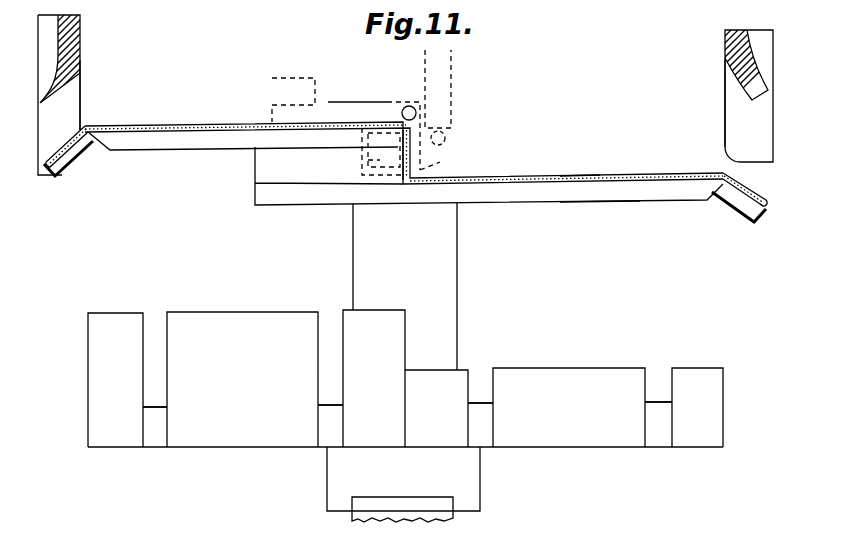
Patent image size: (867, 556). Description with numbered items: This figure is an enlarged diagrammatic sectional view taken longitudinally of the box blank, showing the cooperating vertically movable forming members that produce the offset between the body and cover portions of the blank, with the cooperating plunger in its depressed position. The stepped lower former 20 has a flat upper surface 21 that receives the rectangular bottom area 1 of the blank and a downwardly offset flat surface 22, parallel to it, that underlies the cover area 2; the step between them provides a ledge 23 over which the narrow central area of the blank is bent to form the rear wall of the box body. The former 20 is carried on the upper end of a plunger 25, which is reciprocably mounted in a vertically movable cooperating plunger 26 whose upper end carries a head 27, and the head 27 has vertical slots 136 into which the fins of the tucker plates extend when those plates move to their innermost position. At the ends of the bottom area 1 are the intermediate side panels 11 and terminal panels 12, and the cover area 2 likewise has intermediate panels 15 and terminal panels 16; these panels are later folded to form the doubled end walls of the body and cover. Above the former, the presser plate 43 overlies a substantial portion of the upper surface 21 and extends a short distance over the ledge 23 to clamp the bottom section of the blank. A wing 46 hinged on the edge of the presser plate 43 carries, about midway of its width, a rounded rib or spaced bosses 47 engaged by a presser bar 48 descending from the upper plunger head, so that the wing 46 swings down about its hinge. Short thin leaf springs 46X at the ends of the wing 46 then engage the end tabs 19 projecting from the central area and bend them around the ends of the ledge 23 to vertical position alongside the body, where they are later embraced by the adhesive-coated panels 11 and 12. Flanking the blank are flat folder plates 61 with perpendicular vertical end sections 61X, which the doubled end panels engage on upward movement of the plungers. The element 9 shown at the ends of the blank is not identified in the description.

The bottom area 1 is at (223, 125).
The cover area 2 is at (572, 173).
The clamp bracket 9 is at (75, 160).
The intermediate side panels 11 is at (62, 157).
The terminal panels 12 is at (58, 165).
The intermediate panels 15 is at (750, 189).
The terminal panels 16 is at (757, 210).
The end tabs 19 is at (364, 160).
The stepped lower former 20 is at (302, 197).
The flat upper surface 21 is at (204, 138).
The downwardly offset flat surface 22 is at (601, 188).
The ledge 23 is at (404, 130).
The plunger 25 is at (457, 315).
The cooperating plunger 26 is at (473, 482).
The head 27 is at (278, 437).
The presser plate 43 is at (345, 110).
The wing 46 is at (425, 166).
The leaf springs 46X is at (378, 165).
The rib or spaced bosses 47 is at (447, 134).
The presser bar 48 is at (435, 73).
The folder plates 61 is at (80, 35).
The vertical end sections 61X is at (73, 117).
The vertical slots 136 is at (154, 342).